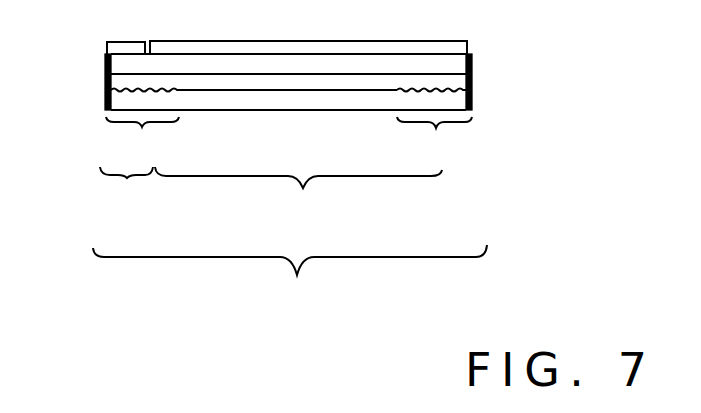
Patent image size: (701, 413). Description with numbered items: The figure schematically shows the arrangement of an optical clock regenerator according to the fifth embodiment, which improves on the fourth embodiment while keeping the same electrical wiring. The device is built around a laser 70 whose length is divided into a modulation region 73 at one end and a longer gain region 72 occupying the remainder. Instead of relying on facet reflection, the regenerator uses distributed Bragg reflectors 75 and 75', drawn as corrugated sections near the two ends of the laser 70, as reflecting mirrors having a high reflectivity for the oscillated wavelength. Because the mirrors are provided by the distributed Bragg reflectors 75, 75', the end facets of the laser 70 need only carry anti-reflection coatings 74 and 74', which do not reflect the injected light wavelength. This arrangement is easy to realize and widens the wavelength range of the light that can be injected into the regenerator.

The laser 70 is at (290, 184).
The gain region 72 is at (308, 134).
The modulation region 73 is at (126, 129).
The anti-reflection coating 74 is at (69, 67).
The anti-reflection coating 74' is at (500, 62).
The distributed Bragg reflector 75 is at (143, 127).
The distributed Bragg reflector 75' is at (434, 128).